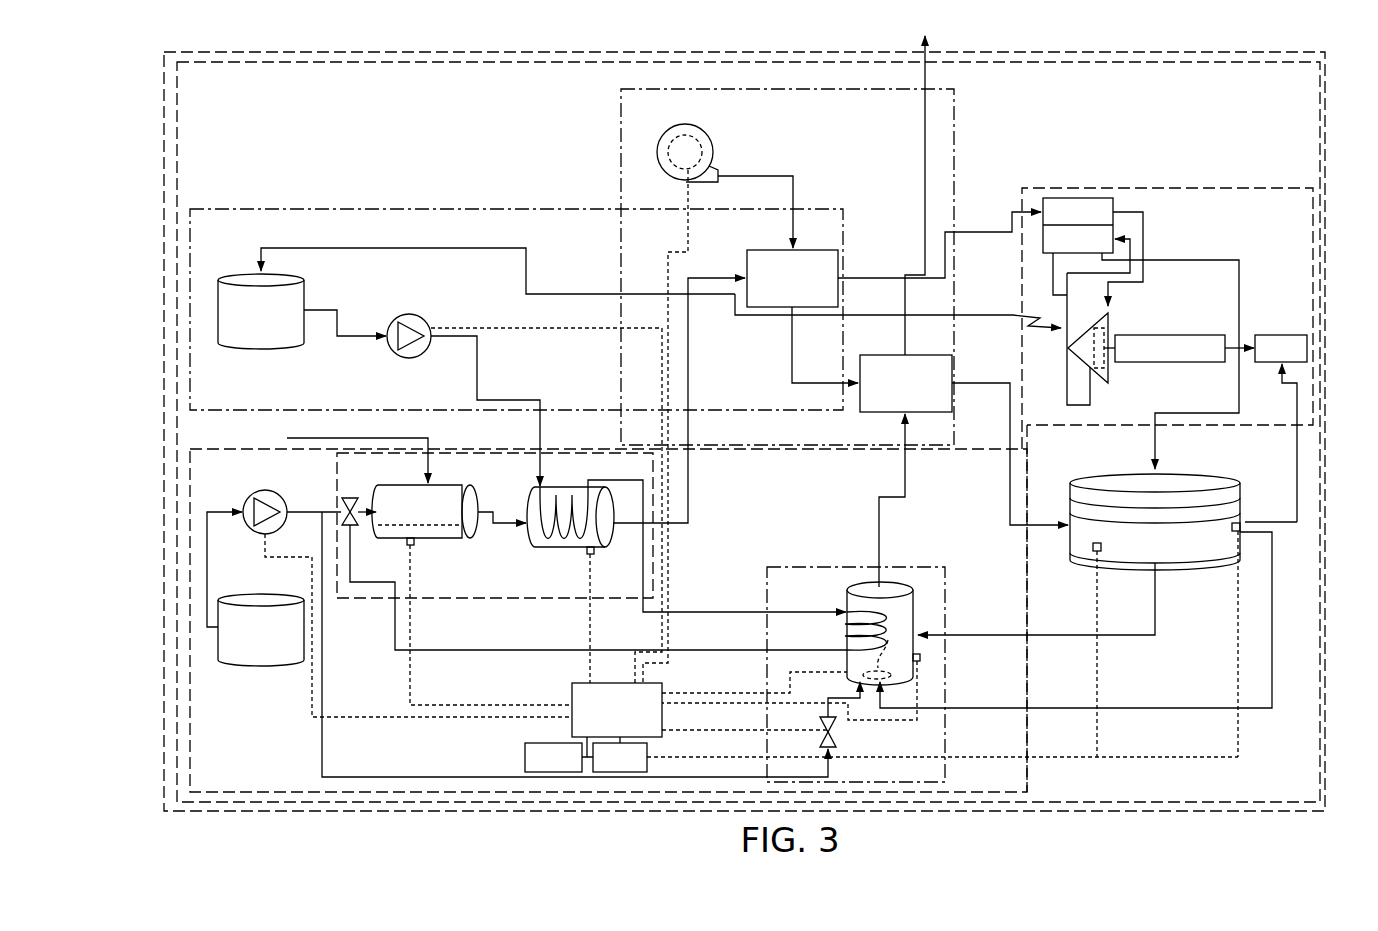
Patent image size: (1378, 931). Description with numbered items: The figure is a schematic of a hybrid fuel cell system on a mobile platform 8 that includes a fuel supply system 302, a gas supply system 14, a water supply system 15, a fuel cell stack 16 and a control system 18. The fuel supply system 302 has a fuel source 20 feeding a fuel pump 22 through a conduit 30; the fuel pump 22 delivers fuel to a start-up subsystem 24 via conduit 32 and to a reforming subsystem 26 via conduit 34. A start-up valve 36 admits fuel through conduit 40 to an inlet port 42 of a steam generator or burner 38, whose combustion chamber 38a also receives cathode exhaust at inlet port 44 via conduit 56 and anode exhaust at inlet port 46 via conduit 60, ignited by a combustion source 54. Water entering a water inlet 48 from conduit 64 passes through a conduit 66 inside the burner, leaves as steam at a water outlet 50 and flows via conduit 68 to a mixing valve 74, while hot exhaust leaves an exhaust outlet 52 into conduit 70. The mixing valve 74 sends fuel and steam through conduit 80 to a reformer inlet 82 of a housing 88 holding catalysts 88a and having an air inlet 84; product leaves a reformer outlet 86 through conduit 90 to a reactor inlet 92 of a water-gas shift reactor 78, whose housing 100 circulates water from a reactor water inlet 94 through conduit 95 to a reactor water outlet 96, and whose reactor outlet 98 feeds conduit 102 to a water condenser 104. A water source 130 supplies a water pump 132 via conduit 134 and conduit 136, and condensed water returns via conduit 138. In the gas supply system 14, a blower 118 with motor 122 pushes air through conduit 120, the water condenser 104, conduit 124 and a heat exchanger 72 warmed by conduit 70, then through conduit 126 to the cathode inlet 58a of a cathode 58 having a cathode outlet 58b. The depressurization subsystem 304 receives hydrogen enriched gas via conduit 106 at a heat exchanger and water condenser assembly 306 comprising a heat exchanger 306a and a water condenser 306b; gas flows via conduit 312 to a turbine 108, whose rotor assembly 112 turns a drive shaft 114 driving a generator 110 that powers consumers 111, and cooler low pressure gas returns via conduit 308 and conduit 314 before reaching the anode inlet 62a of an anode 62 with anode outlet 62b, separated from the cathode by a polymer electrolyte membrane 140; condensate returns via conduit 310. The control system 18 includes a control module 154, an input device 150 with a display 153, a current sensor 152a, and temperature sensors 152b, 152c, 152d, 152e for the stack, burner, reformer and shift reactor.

The mobile platform 8 is at (1326, 170).
The conduit 30 is at (1323, 135).
The water supply system 15 is at (488, 207).
The gas supply system 14 is at (957, 148).
The fuel pump 22 is at (262, 488).
The fuel supply system 302 is at (1213, 185).
The depressurization subsystem 304 is at (1268, 232).
The fuel cell stack 16 is at (1243, 467).
The reforming subsystem 26 is at (670, 567).
The start-up subsystem 24 is at (808, 562).
The water source 130 is at (304, 296).
The conduit 138 is at (550, 293).
The conduit 134 is at (340, 342).
The water pump 132 is at (424, 317).
The conduit 136 is at (478, 376).
The blower 118 is at (722, 140).
The motor 122 is at (702, 152).
The conduit 120 is at (793, 190).
The water condenser 104 is at (777, 249).
The conduit 106 is at (878, 278).
The heat exchanger 72 is at (885, 352).
The conduit 124 is at (792, 352).
The conduit 70 is at (907, 490).
The conduit 126 is at (1008, 460).
The turbine 108 is at (1014, 306).
The conduit 310 is at (985, 318).
The heat exchanger and water condenser assembly 306 is at (1068, 195).
The heat exchanger 306a is at (1094, 198).
The water condenser 306b is at (1041, 250).
The conduit 312 is at (1143, 235).
The conduit 314 is at (1232, 260).
The conduit 308 is at (1090, 395).
The generator 110 is at (1170, 335).
The drive shaft 114 is at (1111, 348).
The rotor assembly 112 is at (1106, 368).
The consumers 111 is at (1266, 428).
The anode 62 is at (1182, 461).
The anode inlet 62a is at (1152, 470).
The anode outlet 62b is at (1160, 565).
The polymer electrolyte membrane 140 is at (1195, 512).
The first temperature sensor 152b is at (1097, 543).
The current sensor 152a is at (1232, 527).
The cathode 58 is at (1246, 519).
The cathode inlet 58a is at (1070, 555).
The cathode outlet 58b is at (1242, 535).
The conduit 60 is at (1072, 637).
The conduit 56 is at (1072, 708).
The steam generator or burner 38 is at (932, 607).
The combustion chamber 38a is at (903, 615).
The exhaust outlet 52 is at (882, 579).
The combustion source 54 is at (897, 633).
The conduit 66 is at (840, 627).
The water inlet 48 is at (847, 608).
The water outlet 50 is at (847, 663).
The inlet port 46 is at (921, 657).
The second temperature sensor 152c is at (921, 663).
The inlet port 44 is at (888, 700).
The inlet port 42 is at (858, 697).
The conduit 40 is at (826, 712).
The start-up valve 36 is at (840, 736).
The conduit 64 is at (748, 611).
The fuel source 20 is at (262, 668).
The conduit 34 is at (330, 510).
The conduit 32 is at (322, 680).
The mixing valve 74 is at (360, 500).
The conduit 80 is at (375, 525).
The conduit 68 is at (612, 649).
The air inlet 84 is at (430, 460).
The reformer outlet 86 is at (488, 508).
The housing 88 is at (405, 485).
The catalysts 88a is at (455, 532).
The reformer inlet 82 is at (378, 515).
The third temperature sensor 152d is at (408, 575).
The conduit 90 is at (493, 527).
The reactor inlet 92 is at (512, 548).
The water-gas shift reactor 78 is at (563, 485).
The reactor water inlet 94 is at (537, 494).
The conduit 95 is at (545, 548).
The reactor water outlet 96 is at (588, 487).
The reactor outlet 98 is at (612, 520).
The housing 100 is at (560, 553).
The conduit 102 is at (690, 500).
The fourth temperature sensor 152e is at (656, 565).
The control system 18 is at (668, 685).
The control module 154 is at (665, 720).
The display 153 is at (556, 754).
The input device 150 is at (912, 754).